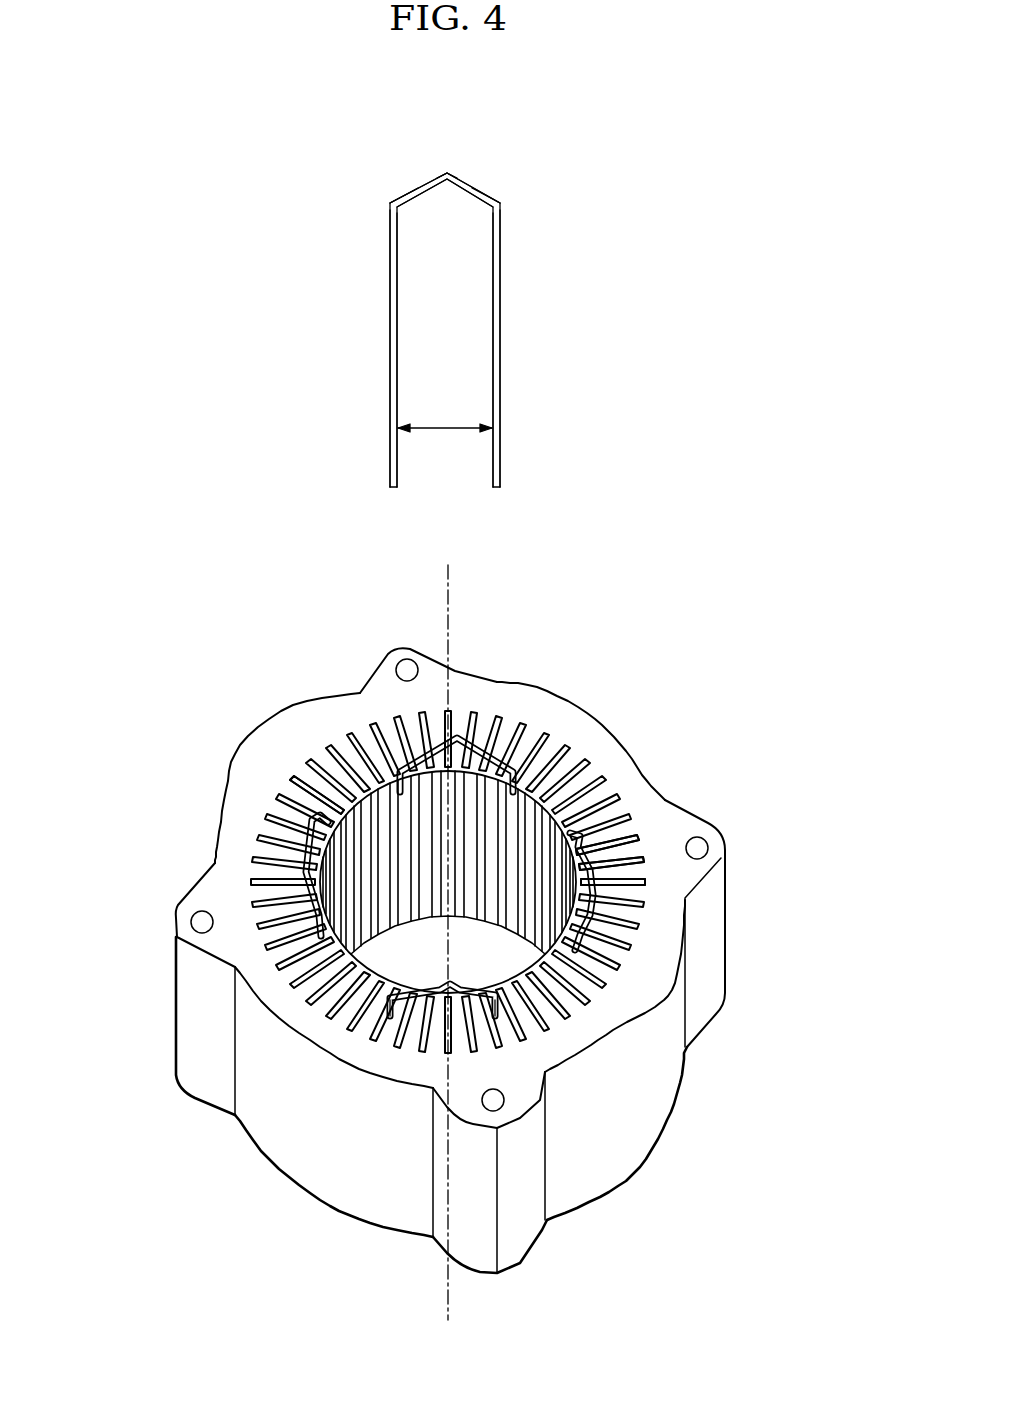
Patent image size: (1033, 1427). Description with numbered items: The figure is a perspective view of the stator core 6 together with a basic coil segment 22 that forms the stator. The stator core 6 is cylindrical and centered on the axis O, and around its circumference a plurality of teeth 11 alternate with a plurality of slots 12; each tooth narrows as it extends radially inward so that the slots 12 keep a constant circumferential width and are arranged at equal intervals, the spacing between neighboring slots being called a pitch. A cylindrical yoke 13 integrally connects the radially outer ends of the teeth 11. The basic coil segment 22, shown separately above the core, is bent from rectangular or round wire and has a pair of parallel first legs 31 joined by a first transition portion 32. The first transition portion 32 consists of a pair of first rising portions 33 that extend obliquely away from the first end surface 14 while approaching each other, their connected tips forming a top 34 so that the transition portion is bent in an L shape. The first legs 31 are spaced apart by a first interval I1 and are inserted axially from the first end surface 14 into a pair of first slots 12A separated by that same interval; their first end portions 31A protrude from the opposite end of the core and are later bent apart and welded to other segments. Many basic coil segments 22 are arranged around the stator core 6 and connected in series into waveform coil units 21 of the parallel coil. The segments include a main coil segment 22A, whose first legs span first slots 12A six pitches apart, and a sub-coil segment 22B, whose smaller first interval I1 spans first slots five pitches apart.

The stator core 6 is at (730, 907).
The teeth 11 is at (628, 942).
The slots 12 is at (622, 966).
The first slots 12A is at (375, 745).
The yoke 13 is at (600, 752).
The first end surface 14 is at (255, 806).
The coil unit 21 is at (300, 856).
The basic coil segment 22 is at (430, 731).
The main coil segment 22A is at (516, 301).
The sub-coil segment 22B is at (420, 1003).
The first legs 31 is at (391, 326).
The first end portions 31A is at (389, 487).
The first transition portion 32 is at (428, 185).
The first rising portions 33 is at (413, 190).
The top 34 is at (443, 178).
The axis O is at (452, 583).
The first interval I1 is at (445, 442).